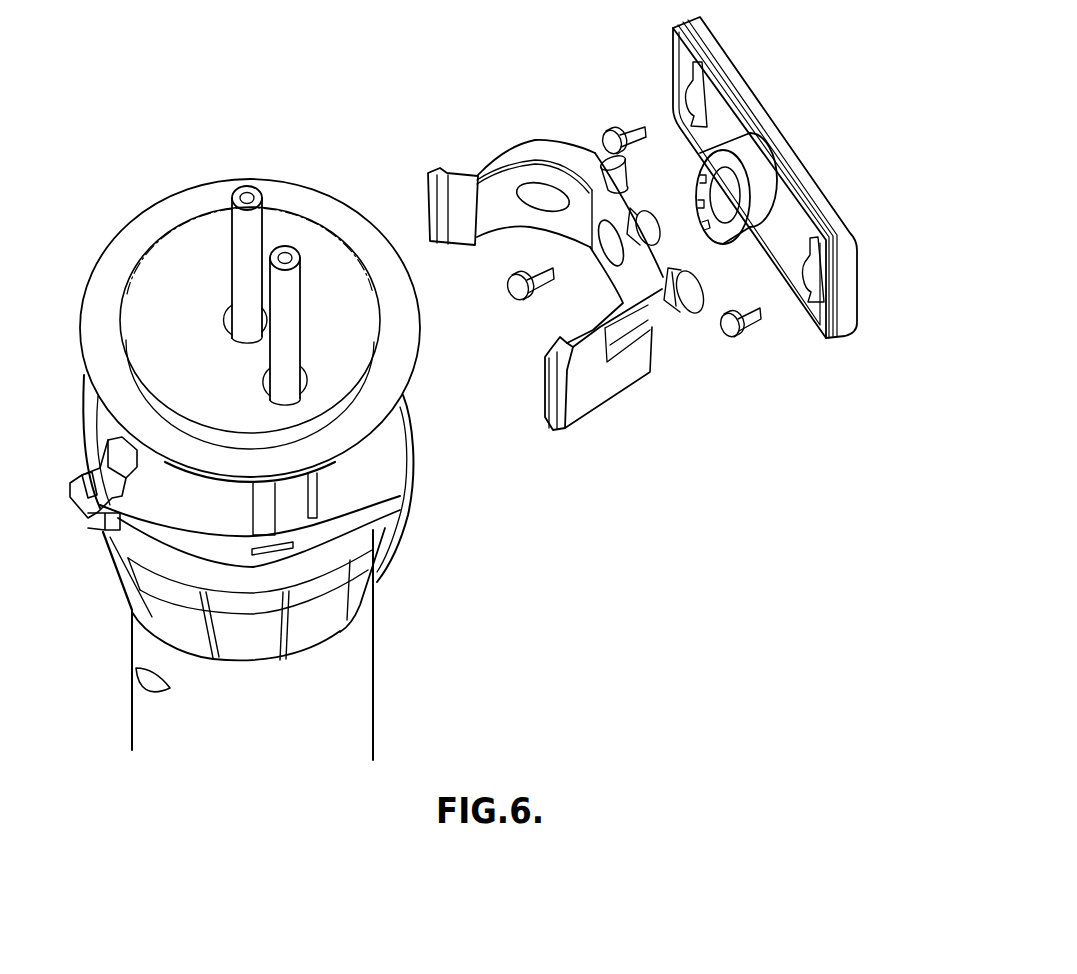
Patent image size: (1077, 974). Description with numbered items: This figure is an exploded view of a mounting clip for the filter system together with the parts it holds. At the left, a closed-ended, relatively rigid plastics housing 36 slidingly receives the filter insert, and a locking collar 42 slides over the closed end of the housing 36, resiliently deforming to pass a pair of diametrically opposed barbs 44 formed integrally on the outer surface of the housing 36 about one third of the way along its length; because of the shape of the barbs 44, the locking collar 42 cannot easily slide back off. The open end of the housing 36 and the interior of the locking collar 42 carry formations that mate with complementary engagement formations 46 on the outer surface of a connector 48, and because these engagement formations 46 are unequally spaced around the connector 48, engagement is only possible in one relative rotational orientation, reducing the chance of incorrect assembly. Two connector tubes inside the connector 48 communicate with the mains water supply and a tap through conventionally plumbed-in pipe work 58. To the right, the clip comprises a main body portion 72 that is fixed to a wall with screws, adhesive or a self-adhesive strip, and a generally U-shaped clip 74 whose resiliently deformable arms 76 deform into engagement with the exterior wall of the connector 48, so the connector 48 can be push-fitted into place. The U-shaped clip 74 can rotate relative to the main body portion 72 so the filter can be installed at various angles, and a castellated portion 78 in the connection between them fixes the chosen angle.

The housing 36 is at (357, 702).
The locking collar 42 is at (347, 550).
The barbs 44 is at (138, 688).
The engagement formations 46 is at (117, 469).
The connector 48 is at (343, 477).
The pipe work 58 is at (240, 233).
The main body portion 72 is at (747, 103).
The U-shaped clip 74 is at (573, 163).
The resiliently deformable arms 76 is at (490, 163).
The castellated portion 78 is at (725, 237).